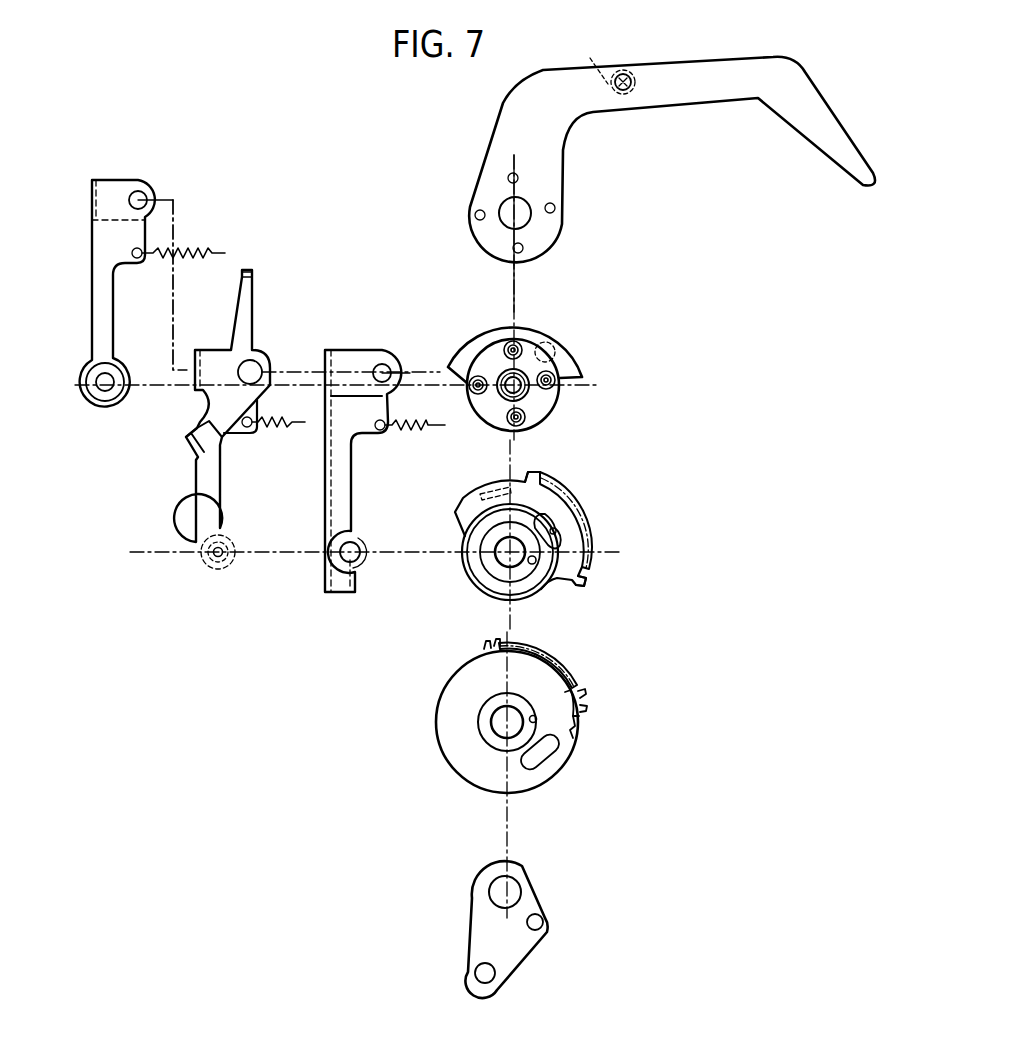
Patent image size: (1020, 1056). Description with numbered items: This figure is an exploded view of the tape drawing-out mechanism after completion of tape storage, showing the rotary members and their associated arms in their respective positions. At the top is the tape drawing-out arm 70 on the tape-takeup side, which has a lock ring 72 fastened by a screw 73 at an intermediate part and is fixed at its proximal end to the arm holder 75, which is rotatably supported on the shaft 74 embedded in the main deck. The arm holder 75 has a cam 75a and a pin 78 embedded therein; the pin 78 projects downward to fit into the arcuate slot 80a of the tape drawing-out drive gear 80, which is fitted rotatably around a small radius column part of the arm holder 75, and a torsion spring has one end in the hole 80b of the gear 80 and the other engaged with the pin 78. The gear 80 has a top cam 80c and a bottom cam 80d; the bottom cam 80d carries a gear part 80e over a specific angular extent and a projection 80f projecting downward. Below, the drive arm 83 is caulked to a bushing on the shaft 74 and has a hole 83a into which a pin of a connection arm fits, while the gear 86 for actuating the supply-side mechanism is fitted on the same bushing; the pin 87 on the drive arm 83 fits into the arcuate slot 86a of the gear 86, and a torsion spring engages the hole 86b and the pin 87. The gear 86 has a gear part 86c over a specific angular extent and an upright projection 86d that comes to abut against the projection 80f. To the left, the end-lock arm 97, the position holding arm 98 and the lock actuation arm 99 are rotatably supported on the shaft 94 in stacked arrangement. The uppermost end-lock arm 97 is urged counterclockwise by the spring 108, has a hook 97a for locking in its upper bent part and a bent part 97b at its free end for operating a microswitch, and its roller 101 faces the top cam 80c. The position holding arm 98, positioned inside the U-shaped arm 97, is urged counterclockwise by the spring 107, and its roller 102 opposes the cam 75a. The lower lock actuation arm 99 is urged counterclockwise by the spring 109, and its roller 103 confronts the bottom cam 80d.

The tape drawing-out arm 70 is at (753, 95).
The lock ring 72 is at (593, 60).
The screw 73 is at (624, 71).
The shaft 74 is at (510, 280).
The arm holder 75 is at (553, 415).
The cam 75a is at (450, 367).
The pin 78 is at (555, 350).
The tape drawing-out drive gear 80 is at (463, 567).
The arcuate slot 80a is at (556, 532).
The hole 80b is at (534, 563).
The top cam 80c is at (592, 568).
The bottom cam 80d is at (510, 478).
The gear part 80e is at (565, 490).
The projection 80f is at (490, 485).
The drive arm 83 is at (468, 918).
The hole 83a is at (476, 970).
The gear 86 is at (443, 694).
The arcuate slot 86a is at (547, 758).
The hole 86b is at (534, 716).
The gear part 86c is at (568, 665).
The upright projection 86d is at (574, 733).
The pin 87 is at (544, 918).
The shaft 94 is at (173, 302).
The end-lock arm 97 is at (252, 327).
The hook 97a is at (188, 437).
The bent part 97b is at (247, 272).
The position holding arm 98 is at (93, 298).
The lock actuation arm 99 is at (323, 498).
The roller 101 is at (236, 540).
The roller 102 is at (118, 373).
The roller 103 is at (354, 535).
The spring 107 is at (193, 245).
The spring 108 is at (278, 418).
The spring 109 is at (410, 415).